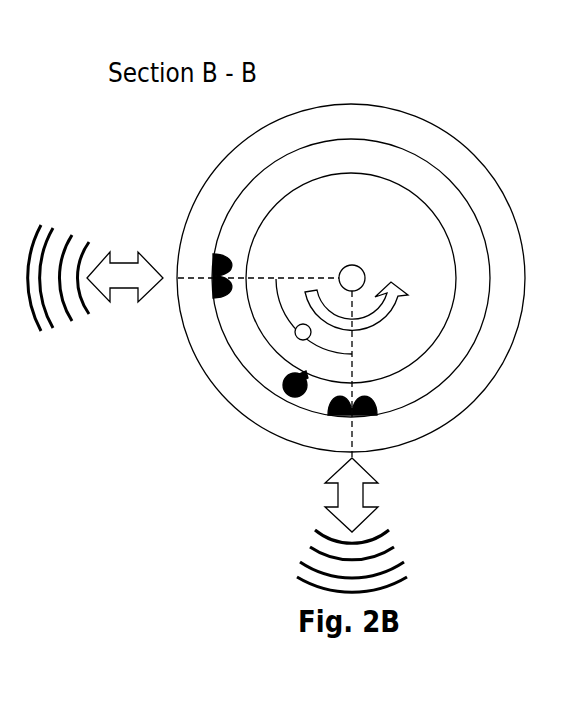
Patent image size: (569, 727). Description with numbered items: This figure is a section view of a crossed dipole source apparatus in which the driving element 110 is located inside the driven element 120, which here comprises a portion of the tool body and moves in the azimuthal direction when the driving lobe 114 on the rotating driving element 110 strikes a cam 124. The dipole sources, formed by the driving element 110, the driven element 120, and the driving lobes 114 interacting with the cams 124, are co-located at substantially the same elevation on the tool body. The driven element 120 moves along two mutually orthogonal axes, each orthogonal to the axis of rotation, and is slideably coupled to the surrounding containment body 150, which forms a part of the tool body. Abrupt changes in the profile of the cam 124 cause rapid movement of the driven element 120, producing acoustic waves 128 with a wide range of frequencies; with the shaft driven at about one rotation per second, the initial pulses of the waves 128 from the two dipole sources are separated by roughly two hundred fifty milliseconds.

The driving element 110 is at (300, 181).
The driven element 120 is at (448, 132).
The containment body 150 is at (498, 371).
The cam 124 is at (231, 262).
The driving lobe 114 is at (285, 378).
The acoustic waves 128 is at (68, 225).